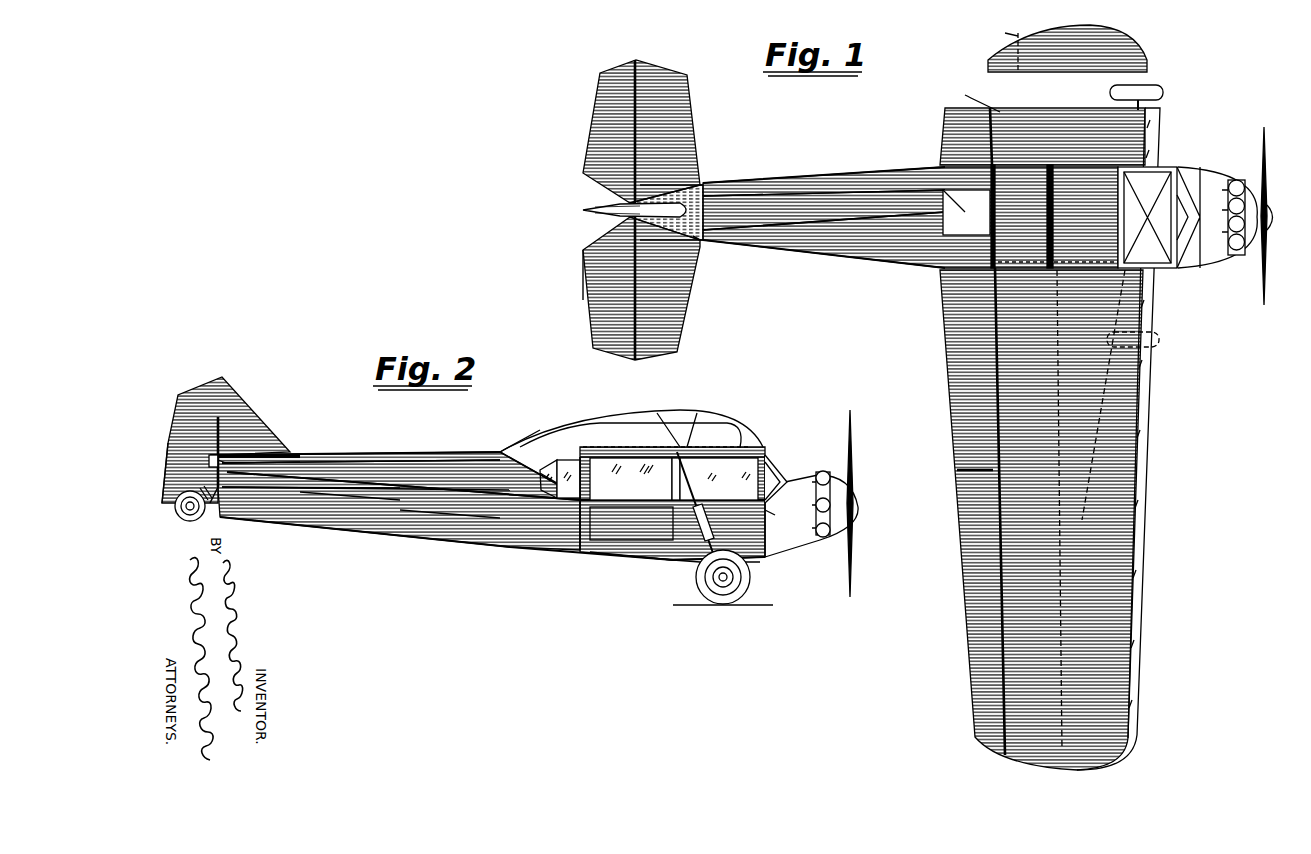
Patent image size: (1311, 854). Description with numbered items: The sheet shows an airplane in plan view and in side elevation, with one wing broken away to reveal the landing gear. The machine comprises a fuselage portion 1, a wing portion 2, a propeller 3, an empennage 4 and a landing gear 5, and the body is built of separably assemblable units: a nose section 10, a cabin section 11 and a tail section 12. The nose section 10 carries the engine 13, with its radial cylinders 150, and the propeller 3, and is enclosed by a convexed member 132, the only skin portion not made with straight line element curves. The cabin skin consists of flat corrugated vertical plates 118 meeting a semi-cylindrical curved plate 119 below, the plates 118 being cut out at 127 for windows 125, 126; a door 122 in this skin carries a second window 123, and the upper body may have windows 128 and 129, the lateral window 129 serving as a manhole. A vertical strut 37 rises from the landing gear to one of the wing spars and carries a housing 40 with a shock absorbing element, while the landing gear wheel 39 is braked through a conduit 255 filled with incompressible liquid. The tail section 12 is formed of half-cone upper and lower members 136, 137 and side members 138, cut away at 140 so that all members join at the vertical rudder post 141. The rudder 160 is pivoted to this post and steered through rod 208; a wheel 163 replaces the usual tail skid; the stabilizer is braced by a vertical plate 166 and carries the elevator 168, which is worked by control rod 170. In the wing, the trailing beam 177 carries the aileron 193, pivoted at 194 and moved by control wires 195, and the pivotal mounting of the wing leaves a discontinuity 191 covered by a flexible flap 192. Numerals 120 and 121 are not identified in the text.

In FIG. 1, the fuselage portion 1 is at (857, 185).
In FIG. 2, the fuselage portion 1 is at (491, 503).
In FIG. 1, the wing portion 2 is at (1135, 56).
In FIG. 2, the wing portion 2 is at (745, 425).
In FIG. 1, the propeller 3 is at (1268, 162).
In FIG. 2, the propeller 3 is at (858, 470).
In FIG. 1, the empennage 4 is at (686, 176).
In FIG. 2, the empennage 4 is at (258, 452).
In FIG. 1, the landing gear 5 is at (1156, 268).
In FIG. 2, the landing gear 5 is at (752, 590).
In FIG. 1, the nose section 10 is at (1196, 258).
In FIG. 2, the nose section 10 is at (800, 478).
In FIG. 2, the cabin section 11 is at (762, 447).
In FIG. 1, the tail section 12 is at (751, 192).
In FIG. 2, the tail section 12 is at (418, 457).
In FIG. 1, the engine 13 is at (1236, 180).
In FIG. 2, the engine 13 is at (825, 472).
In FIG. 2, the vertical strut 37 is at (682, 478).
In FIG. 1, the landing gear wheel 39 is at (1165, 92).
In FIG. 2, the landing gear wheel 39 is at (698, 591).
In FIG. 2, the housing 40 is at (697, 520).
In FIG. 2, the vertical plates 118 is at (768, 518).
In FIG. 2, the curved plate 119 is at (650, 554).
In FIG. 2, the wing spar 120 is at (690, 415).
In FIG. 2, the front cabin window 121 is at (752, 488).
In FIG. 2, the door 122 is at (627, 532).
In FIG. 2, the second window 123 is at (631, 479).
In FIG. 2, the window 125 is at (565, 462).
In FIG. 2, the window 126 is at (543, 460).
In FIG. 2, the plates 127 is at (517, 443).
In FIG. 1, the window 128 is at (1159, 217).
In FIG. 1, the lateral window 129 is at (960, 190).
In FIG. 2, the convexed member 132 is at (778, 546).
In FIG. 1, the upper member 136 is at (869, 230).
In FIG. 2, the upper member 136 is at (379, 468).
In FIG. 2, the lower member 137 is at (473, 540).
In FIG. 2, the side members 138 is at (353, 505).
In FIG. 2, the cut away 140 is at (226, 461).
In FIG. 2, the vertical rudder post 141 is at (215, 518).
In FIG. 1, the radial cylinders 150 is at (1228, 206).
In FIG. 2, the radial cylinders 150 is at (818, 500).
In FIG. 1, the rudder 160 is at (580, 212).
In FIG. 2, the rudder 160 is at (197, 395).
In FIG. 2, the wheel 163 is at (180, 518).
In FIG. 1, the vertical plate 166 is at (692, 243).
In FIG. 2, the vertical plate 166 is at (228, 459).
In FIG. 1, the elevator 168 is at (596, 286).
In FIG. 2, the elevator 168 is at (195, 443).
In FIG. 2, the control rod 170 is at (301, 466).
In FIG. 1, the beam 177 is at (985, 405).
In FIG. 1, the discontinuity 191 is at (1050, 210).
In FIG. 1, the flexible flap 192 is at (1047, 242).
In FIG. 1, the ailerons 193 is at (950, 666).
In FIG. 1, the pivot 194 is at (990, 768).
In FIG. 1, the control wires 195 is at (1120, 418).
In FIG. 2, the rod 208 is at (334, 483).
In FIG. 2, the conduit 255 is at (580, 490).